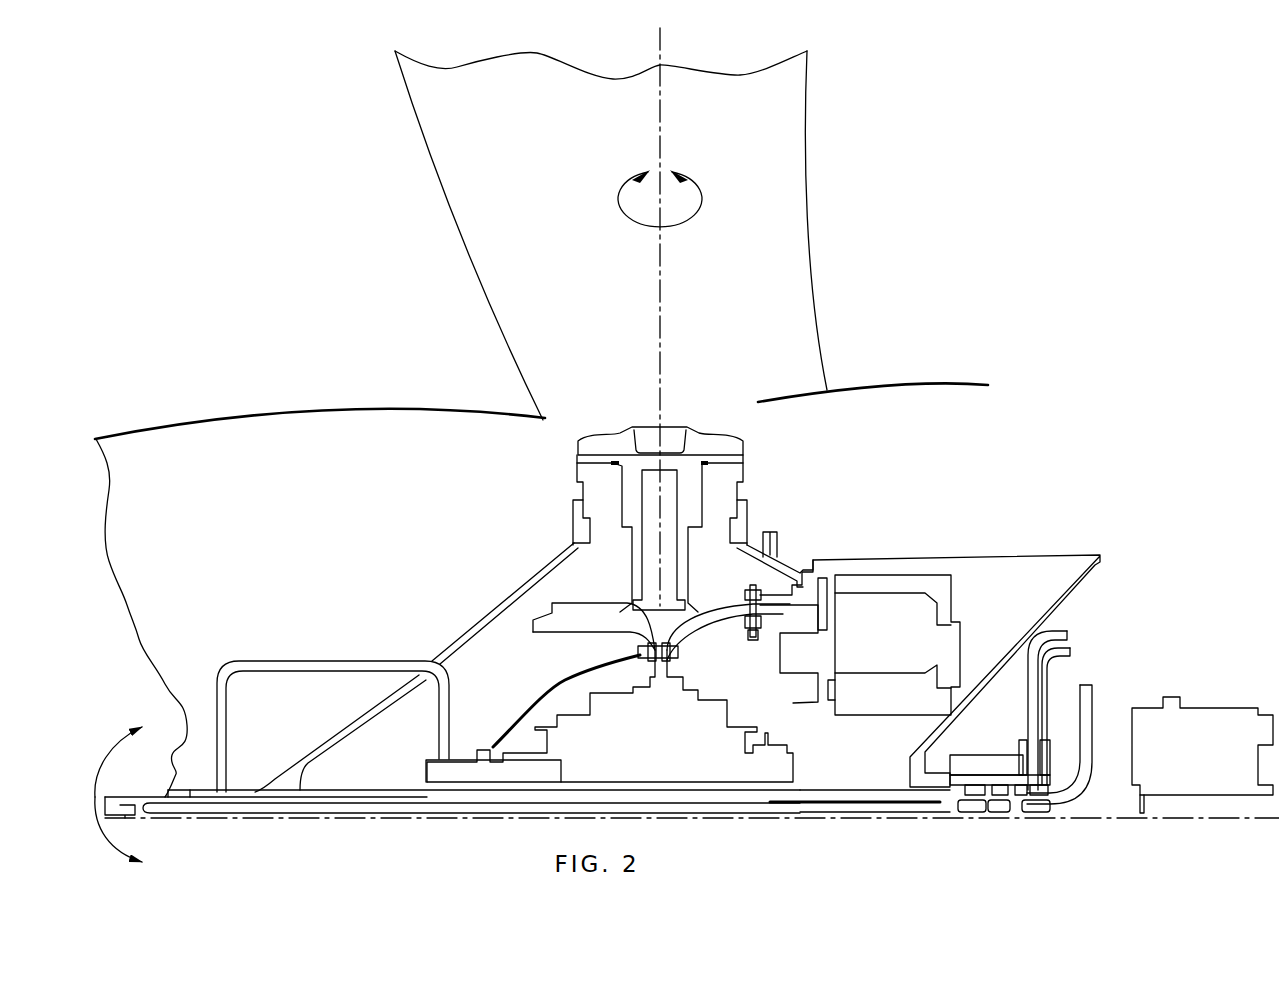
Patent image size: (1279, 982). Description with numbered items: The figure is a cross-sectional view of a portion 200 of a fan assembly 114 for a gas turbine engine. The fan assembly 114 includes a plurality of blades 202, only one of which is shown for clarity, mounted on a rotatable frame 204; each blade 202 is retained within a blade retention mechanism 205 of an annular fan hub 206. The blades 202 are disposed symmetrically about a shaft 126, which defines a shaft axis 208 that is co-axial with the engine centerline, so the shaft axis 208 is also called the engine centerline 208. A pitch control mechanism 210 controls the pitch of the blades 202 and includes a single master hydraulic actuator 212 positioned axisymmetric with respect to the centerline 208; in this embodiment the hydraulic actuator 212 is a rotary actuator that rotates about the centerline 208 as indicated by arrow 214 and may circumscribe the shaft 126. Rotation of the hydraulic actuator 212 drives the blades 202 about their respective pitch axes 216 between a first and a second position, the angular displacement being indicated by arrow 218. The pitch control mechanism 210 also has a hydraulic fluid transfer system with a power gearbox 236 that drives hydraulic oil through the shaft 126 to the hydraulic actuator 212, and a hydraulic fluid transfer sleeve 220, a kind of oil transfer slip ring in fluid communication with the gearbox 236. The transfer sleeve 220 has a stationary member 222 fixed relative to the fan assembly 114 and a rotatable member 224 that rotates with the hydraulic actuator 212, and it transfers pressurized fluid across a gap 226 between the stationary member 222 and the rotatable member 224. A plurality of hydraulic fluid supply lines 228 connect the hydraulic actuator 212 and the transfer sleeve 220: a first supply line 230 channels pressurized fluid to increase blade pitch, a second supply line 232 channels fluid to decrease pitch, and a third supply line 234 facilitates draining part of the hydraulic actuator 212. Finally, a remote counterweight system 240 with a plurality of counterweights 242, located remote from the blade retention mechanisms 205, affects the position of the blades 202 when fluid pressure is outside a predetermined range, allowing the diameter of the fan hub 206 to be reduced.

The fan assembly 114 is at (433, 523).
The shaft 126 is at (115, 797).
The portion 200 is at (947, 206).
The blades 202 is at (780, 159).
The rotatable frame 204 is at (458, 632).
The blade retention mechanisms 205 is at (598, 410).
The annular fan hub 206 is at (760, 486).
The shaft axis 208 is at (232, 820).
The pitch control mechanism 210 is at (845, 411).
The hydraulic actuator 212 is at (705, 692).
The arrow 214 is at (110, 840).
The pitch axes 216 is at (663, 117).
The arrow 218 is at (683, 222).
The hydraulic fluid transfer sleeve 220 is at (1083, 803).
The stationary member 222 is at (1010, 755).
The rotatable member 224 is at (998, 807).
The gap 226 is at (1095, 784).
The hydraulic fluid supply lines 228 is at (941, 799).
The first supply line 230 is at (965, 792).
The second supply line 232 is at (1010, 803).
The third supply line 234 is at (1022, 800).
The power gearbox 236 is at (1203, 693).
The remote counterweight system 240 is at (978, 646).
The counterweights 242 is at (887, 703).